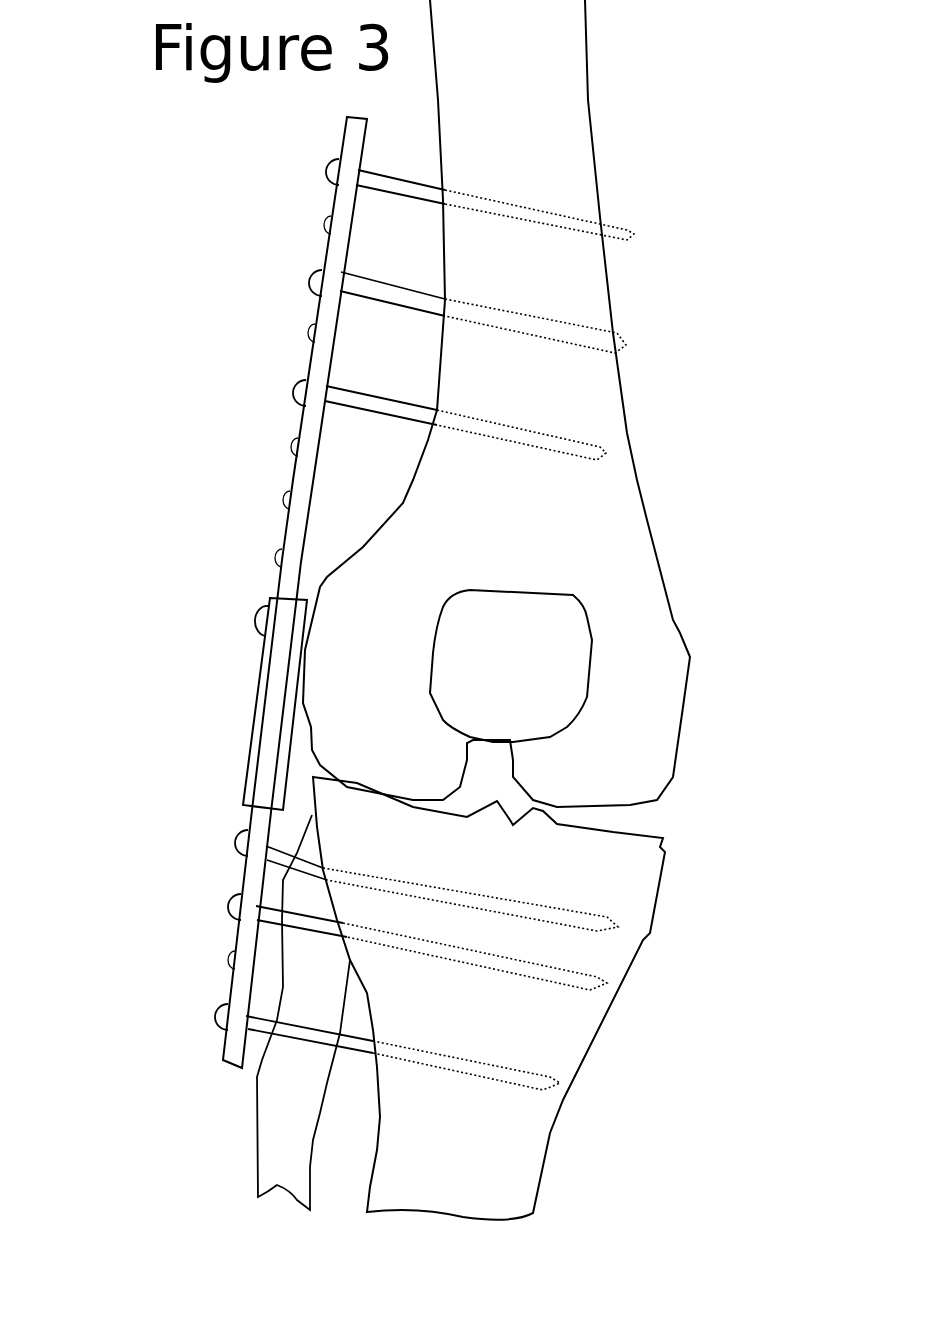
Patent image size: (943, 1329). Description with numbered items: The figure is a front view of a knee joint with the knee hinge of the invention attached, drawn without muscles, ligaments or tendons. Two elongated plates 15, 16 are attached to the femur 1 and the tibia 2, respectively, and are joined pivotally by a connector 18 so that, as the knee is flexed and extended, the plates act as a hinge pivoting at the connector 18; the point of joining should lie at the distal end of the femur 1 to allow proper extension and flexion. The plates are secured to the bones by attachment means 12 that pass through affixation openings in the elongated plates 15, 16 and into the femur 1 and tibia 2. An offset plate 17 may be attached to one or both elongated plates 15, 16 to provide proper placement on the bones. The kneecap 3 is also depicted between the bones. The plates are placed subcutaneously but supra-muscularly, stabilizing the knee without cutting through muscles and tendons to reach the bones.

The femur 1 is at (496, 403).
The tibia 2 is at (489, 998).
The patella 3 is at (511, 666).
The attachment means 12 is at (383, 405).
The elongated plate 15 is at (296, 467).
The elongated plate 16 is at (260, 835).
The offset plate 17 is at (263, 777).
The connector 18 is at (255, 620).